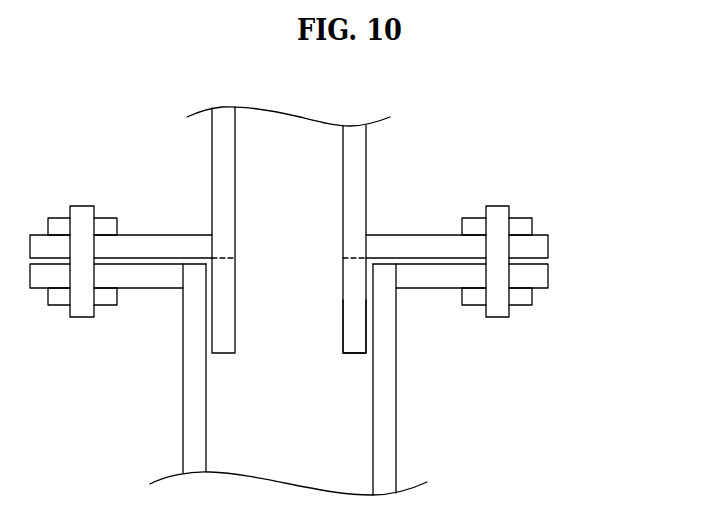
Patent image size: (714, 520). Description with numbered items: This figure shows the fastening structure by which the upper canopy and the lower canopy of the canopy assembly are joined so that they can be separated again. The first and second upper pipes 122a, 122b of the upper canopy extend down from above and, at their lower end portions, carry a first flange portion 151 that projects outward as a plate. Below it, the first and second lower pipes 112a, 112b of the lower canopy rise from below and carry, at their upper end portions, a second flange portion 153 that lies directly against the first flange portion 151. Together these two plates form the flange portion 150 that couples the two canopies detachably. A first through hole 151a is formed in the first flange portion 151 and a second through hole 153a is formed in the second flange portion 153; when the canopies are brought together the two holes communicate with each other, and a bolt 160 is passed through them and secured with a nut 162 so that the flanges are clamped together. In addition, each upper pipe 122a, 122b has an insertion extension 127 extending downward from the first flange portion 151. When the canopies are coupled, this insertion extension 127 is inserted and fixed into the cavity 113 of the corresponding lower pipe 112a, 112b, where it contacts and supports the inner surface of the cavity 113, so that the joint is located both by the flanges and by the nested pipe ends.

The first upper pipe 122a is at (156, 230).
The second upper pipe 122b is at (211, 148).
The insertion extension 127 is at (360, 340).
The first lower pipe 112a is at (333, 368).
The second lower pipe 112b is at (393, 433).
The cavity 113 is at (374, 406).
The flange portion 150 is at (617, 235).
The first flange portion 151 is at (322, 227).
The first through hole 151a is at (510, 248).
The second flange portion 153 is at (322, 299).
The second through hole 153a is at (510, 275).
The bolt 160 is at (497, 310).
The nut 162 is at (475, 222).